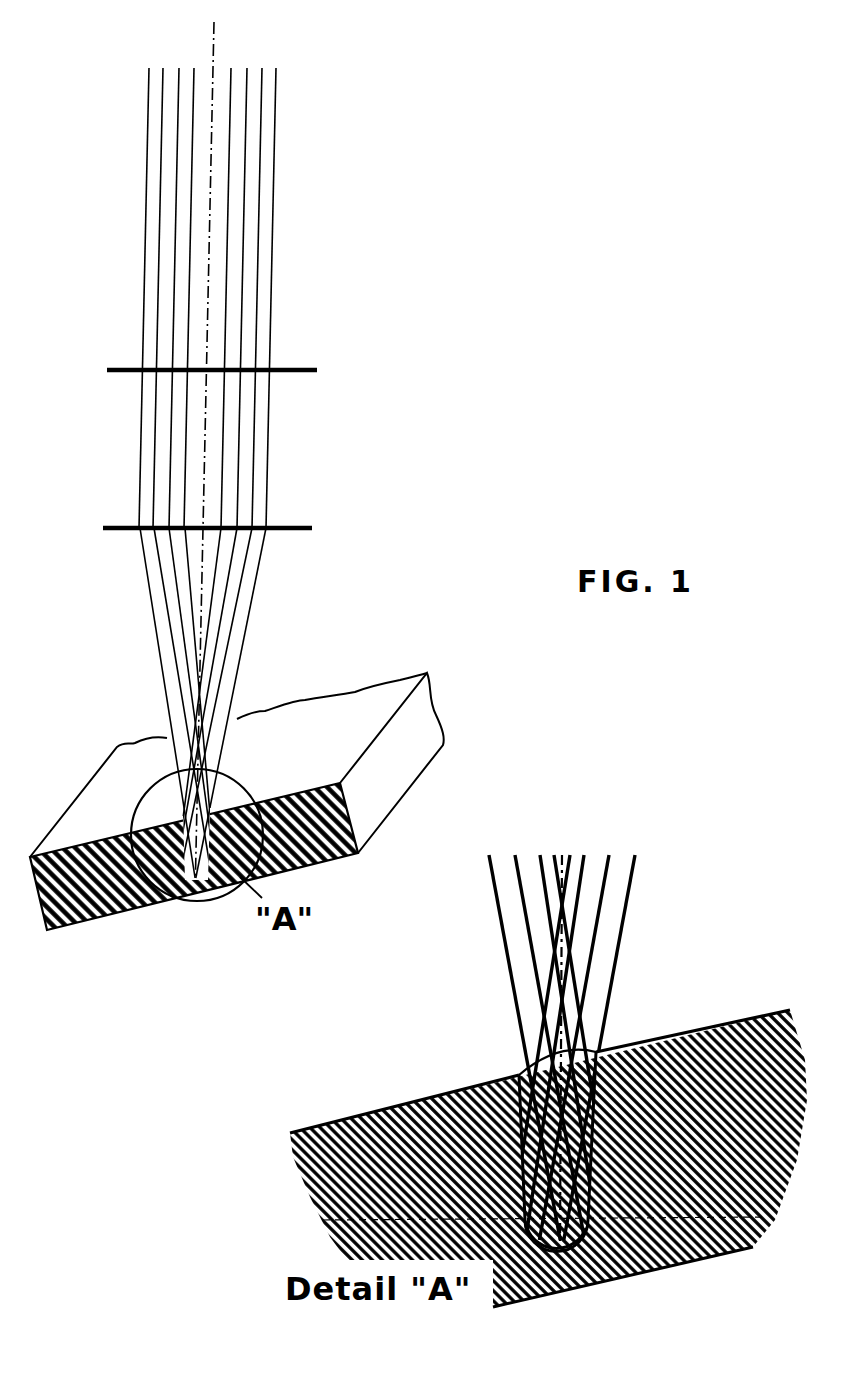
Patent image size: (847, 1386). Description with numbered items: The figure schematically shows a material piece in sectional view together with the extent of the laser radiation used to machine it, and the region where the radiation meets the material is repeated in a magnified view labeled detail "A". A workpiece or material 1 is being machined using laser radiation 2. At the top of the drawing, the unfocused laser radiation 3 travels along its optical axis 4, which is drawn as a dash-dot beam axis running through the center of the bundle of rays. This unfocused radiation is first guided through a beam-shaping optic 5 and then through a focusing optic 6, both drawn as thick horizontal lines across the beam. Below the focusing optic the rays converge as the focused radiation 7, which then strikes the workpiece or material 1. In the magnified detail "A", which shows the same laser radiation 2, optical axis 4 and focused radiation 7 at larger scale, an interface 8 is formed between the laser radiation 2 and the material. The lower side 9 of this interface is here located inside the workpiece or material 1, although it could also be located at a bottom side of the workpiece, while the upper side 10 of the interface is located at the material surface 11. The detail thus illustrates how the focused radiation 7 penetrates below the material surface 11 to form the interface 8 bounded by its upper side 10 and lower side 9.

The workpiece or material 1 is at (332, 704).
The laser radiation 2 is at (284, 256).
The unfocused laser radiation 3 is at (257, 118).
The optical axis 4 is at (215, 50).
The beam-shaping optic 5 is at (310, 372).
The focusing optic 6 is at (285, 528).
The focused radiation 7 is at (233, 660).
The interface 8 is at (481, 1090).
The lower side of the interface 9 is at (577, 1252).
The upper side of the interface 10 is at (593, 1052).
The material surface 11 is at (385, 710).